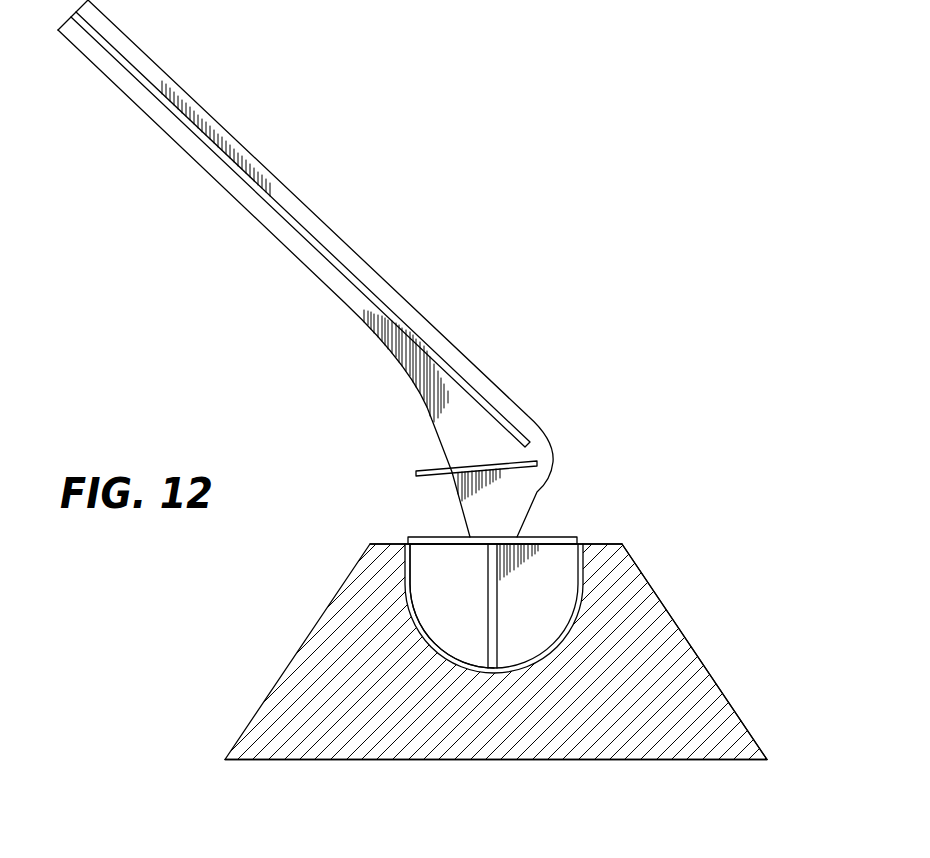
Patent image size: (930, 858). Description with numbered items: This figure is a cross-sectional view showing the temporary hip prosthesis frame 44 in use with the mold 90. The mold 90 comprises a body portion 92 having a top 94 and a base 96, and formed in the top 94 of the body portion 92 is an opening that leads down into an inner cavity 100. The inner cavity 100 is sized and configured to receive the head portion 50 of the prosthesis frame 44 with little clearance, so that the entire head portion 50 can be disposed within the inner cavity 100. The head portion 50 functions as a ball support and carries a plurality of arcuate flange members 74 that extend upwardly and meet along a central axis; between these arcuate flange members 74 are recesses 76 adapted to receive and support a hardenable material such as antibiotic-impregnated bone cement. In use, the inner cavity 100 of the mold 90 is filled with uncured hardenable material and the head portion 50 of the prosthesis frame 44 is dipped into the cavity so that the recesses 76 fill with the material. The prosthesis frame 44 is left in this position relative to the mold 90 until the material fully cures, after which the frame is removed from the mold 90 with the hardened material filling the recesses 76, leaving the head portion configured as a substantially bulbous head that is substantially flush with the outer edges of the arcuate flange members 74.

The temporary hip prosthesis frame 44 is at (320, 185).
The head portion 50 is at (599, 526).
The arcuate flange member 74 is at (493, 612).
The recess 76 is at (441, 579).
The mold 90 is at (752, 605).
The body portion 92 is at (723, 693).
The top 94 is at (348, 505).
The base 96 is at (737, 782).
The inner cavity 100 is at (583, 577).